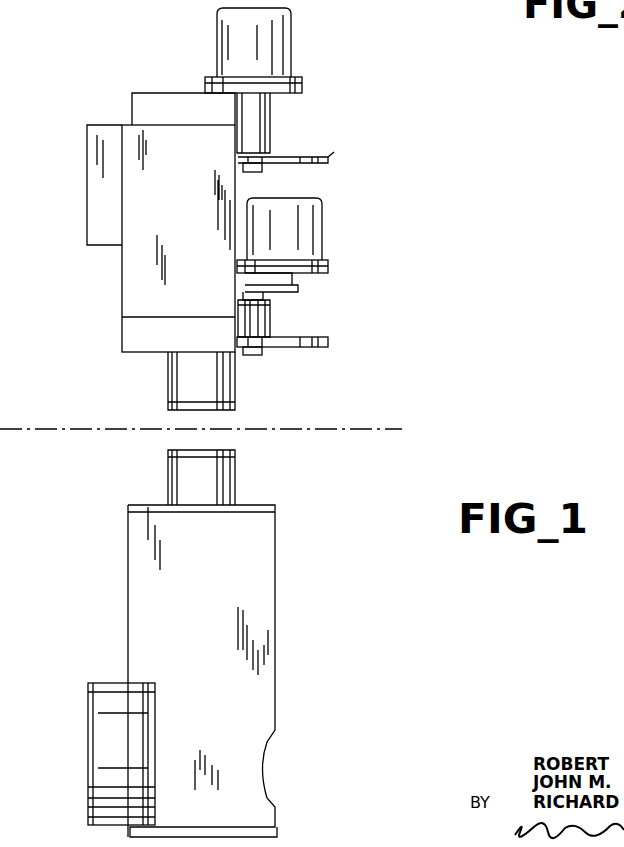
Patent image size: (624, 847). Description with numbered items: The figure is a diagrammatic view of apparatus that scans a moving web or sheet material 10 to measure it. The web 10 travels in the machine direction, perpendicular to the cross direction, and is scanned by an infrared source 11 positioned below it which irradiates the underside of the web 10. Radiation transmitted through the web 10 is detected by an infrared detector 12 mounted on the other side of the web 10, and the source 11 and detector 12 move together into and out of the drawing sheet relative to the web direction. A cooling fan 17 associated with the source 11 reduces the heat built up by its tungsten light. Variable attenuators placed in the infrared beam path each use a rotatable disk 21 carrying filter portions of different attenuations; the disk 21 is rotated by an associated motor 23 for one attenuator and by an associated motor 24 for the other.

The web or sheet material 10 is at (55, 428).
The infrared source 11 is at (128, 577).
The infrared detector 12 is at (122, 280).
The cooling fan 17 is at (102, 752).
The rotatable disk 21 is at (330, 158).
The motor 23 is at (322, 229).
The motor 24 is at (284, 38).